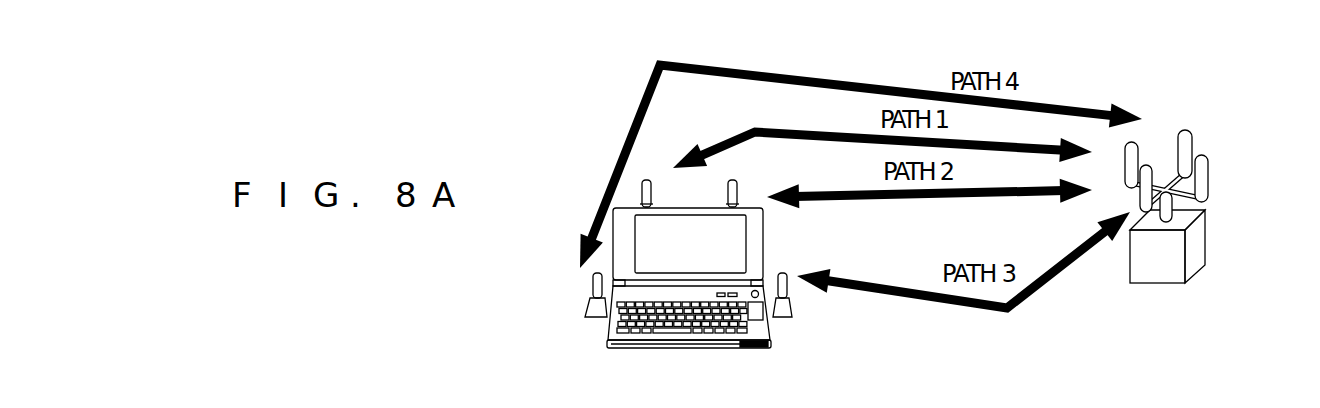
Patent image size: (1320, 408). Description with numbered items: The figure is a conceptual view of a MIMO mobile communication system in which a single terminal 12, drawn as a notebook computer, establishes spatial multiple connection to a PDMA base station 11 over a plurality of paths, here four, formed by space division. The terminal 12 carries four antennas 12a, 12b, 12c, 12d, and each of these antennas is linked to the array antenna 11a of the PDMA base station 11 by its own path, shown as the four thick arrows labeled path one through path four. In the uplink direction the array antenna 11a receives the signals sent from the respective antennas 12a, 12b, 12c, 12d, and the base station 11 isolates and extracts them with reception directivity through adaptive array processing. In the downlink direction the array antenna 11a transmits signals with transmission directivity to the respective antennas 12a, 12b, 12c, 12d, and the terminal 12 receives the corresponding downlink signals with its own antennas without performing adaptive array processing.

The PDMA base station 11 is at (1132, 270).
The array antenna 11a is at (1194, 137).
The terminal 12 is at (758, 242).
The antenna 12a is at (651, 188).
The antenna 12b is at (737, 184).
The antenna 12c is at (789, 290).
The antenna 12d is at (592, 285).